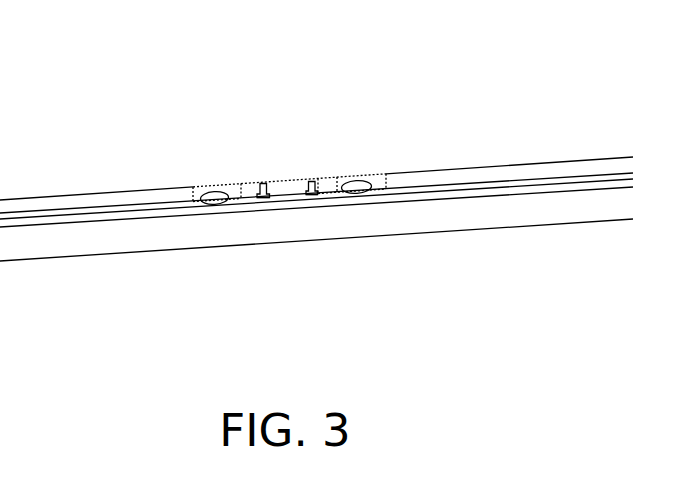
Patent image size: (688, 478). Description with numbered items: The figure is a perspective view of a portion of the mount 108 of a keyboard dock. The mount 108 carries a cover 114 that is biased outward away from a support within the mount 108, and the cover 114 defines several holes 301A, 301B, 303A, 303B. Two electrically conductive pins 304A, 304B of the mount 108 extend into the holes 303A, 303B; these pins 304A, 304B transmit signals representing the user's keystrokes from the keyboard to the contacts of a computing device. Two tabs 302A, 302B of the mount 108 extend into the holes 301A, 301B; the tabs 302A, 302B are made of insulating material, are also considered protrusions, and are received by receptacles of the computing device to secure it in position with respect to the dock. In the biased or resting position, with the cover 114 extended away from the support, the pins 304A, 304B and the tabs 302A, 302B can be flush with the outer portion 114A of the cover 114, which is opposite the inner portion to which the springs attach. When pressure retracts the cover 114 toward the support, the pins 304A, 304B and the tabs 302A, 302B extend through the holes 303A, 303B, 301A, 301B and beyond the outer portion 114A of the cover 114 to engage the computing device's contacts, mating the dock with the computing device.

The cover 114 is at (109, 197).
The outer portion 114A is at (502, 181).
The mount 108 is at (110, 257).
The hole 301A is at (204, 192).
The hole 301B is at (362, 174).
The tab 302A is at (220, 204).
The tab 302B is at (373, 193).
The hole 303A is at (264, 191).
The hole 303B is at (310, 198).
The electrically conductive pin 304A is at (258, 182).
The electrically conductive pin 304B is at (312, 180).